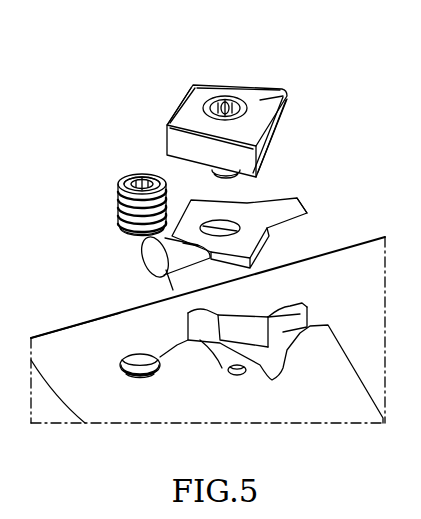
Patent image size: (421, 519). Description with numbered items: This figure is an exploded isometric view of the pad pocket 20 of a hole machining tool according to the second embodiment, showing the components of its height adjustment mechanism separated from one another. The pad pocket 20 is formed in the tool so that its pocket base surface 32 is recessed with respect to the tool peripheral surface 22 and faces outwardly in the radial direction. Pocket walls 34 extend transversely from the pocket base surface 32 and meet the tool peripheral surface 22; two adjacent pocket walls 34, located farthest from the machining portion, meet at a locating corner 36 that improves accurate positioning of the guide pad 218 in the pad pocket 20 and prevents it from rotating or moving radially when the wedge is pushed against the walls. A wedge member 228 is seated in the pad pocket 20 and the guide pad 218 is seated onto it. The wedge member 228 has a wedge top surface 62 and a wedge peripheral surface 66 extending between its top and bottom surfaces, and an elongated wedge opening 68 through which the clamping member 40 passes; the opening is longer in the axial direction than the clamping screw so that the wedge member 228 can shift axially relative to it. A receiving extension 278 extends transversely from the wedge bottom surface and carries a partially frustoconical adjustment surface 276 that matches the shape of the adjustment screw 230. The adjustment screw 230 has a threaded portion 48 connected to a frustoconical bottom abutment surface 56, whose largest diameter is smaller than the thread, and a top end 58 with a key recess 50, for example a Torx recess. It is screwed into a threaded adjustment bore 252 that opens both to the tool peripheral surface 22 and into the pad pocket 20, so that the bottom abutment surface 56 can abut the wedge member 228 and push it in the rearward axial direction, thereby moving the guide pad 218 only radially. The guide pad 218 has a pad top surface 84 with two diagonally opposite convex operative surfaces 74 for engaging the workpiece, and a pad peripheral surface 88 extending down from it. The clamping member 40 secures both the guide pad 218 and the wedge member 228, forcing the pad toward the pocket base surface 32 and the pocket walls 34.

The pad pocket 20 is at (129, 298).
The tool peripheral surface 22 is at (208, 334).
The pocket base surface 32 is at (214, 358).
The pocket walls 34 is at (258, 328).
The locating corner 36 is at (280, 325).
The clamping member 40 is at (222, 102).
The threaded portion 48 is at (109, 181).
The key recess 50 is at (140, 172).
The bottom abutment surface 56 is at (137, 230).
The top end 58 is at (157, 166).
The wedge top surface 62 is at (205, 209).
The wedge peripheral surface 66 is at (190, 254).
The wedge opening 68 is at (219, 226).
The convex operative surfaces 74 is at (268, 145).
The pad top surface 84 is at (188, 97).
The pad peripheral surface 88 is at (270, 142).
The guide pad 218 is at (252, 82).
The wedge member 228 is at (300, 197).
The adjustment screw 230 is at (126, 166).
The adjustment bore 252 is at (140, 378).
The adjustment surface 276 is at (148, 258).
The receiving extension 278 is at (163, 280).